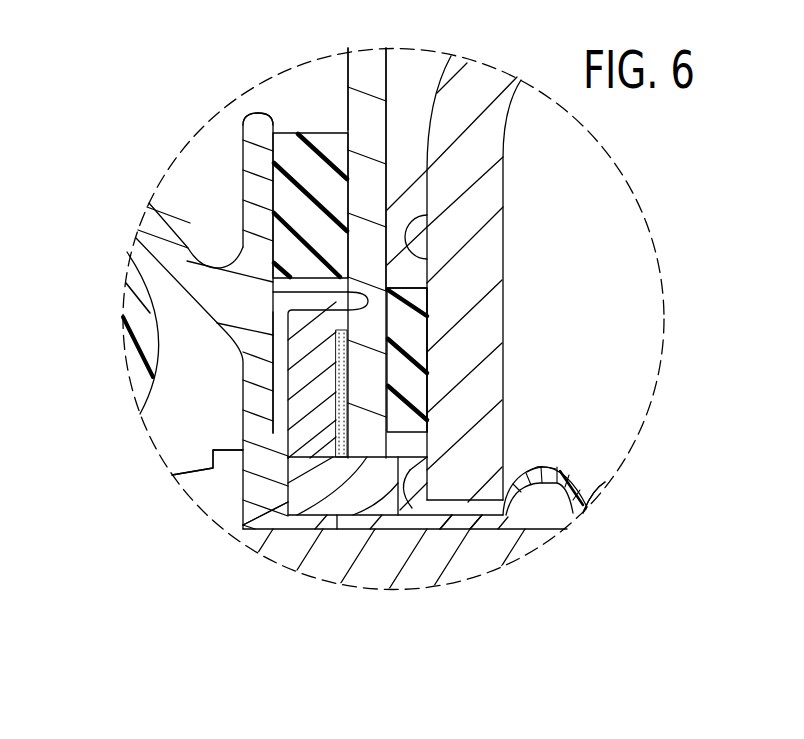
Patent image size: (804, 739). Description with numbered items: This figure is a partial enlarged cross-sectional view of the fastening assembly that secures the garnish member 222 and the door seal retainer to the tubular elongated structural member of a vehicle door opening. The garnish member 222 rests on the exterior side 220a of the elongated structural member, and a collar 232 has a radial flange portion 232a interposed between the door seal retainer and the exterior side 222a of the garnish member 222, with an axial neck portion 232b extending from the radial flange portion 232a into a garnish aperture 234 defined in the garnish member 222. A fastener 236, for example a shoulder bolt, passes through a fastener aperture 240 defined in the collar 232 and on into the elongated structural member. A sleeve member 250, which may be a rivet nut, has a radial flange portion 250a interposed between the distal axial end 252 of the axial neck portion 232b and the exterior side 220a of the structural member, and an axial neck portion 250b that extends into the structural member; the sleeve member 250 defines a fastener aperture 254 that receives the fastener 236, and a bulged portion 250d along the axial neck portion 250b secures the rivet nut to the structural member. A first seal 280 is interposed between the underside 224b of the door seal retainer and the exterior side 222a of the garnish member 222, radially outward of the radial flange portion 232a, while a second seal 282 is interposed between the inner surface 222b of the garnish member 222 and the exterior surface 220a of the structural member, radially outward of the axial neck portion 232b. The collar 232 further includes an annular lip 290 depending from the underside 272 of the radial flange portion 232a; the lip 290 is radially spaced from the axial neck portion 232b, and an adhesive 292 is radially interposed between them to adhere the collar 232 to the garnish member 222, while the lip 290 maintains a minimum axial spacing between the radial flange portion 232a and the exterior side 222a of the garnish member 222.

The exterior side of the elongated structural member 220a is at (427, 214).
The garnish member 222 is at (377, 73).
The exterior side of the garnish member 222a is at (347, 107).
The inner surface of the garnish member 222b is at (387, 190).
The underside of the door seal retainer 224b is at (276, 126).
The collar 232 is at (243, 400).
The radial flange portion 232a is at (297, 356).
The axial neck portion 232b is at (380, 493).
The garnish aperture 234 is at (246, 525).
The fastener 236 is at (207, 500).
The fastener aperture 240 is at (323, 530).
The sleeve member 250 is at (533, 503).
The radial flange portion 250a is at (410, 478).
The axial neck portion 250b is at (606, 482).
The bulged portion 250d is at (558, 470).
The distal axial end 252 is at (403, 493).
The fastener aperture 254 is at (478, 518).
The underside of the radial flange portion 272 is at (290, 322).
The first seal 280 is at (287, 190).
The second seal 282 is at (427, 381).
The lip 290 is at (278, 306).
The adhesive 292 is at (395, 335).